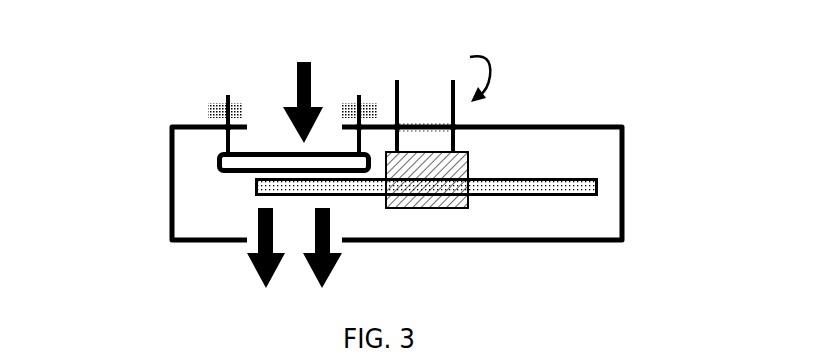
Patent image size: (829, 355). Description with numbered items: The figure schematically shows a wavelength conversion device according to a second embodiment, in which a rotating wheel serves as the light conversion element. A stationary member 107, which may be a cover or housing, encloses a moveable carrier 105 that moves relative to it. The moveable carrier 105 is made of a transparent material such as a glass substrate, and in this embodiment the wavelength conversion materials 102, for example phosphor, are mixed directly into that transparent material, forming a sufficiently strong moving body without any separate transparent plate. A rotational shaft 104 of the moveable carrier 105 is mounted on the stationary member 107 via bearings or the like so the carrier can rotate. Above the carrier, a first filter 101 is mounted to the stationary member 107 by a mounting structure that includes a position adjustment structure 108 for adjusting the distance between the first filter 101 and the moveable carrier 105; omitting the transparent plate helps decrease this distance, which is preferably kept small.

The first filter 101 is at (217, 155).
The wavelength conversion materials 102 is at (598, 188).
The rotational shaft 104 is at (470, 150).
The moveable carrier 105 is at (573, 176).
The stationary member 107 is at (560, 127).
The position adjustment structure 108 is at (207, 108).